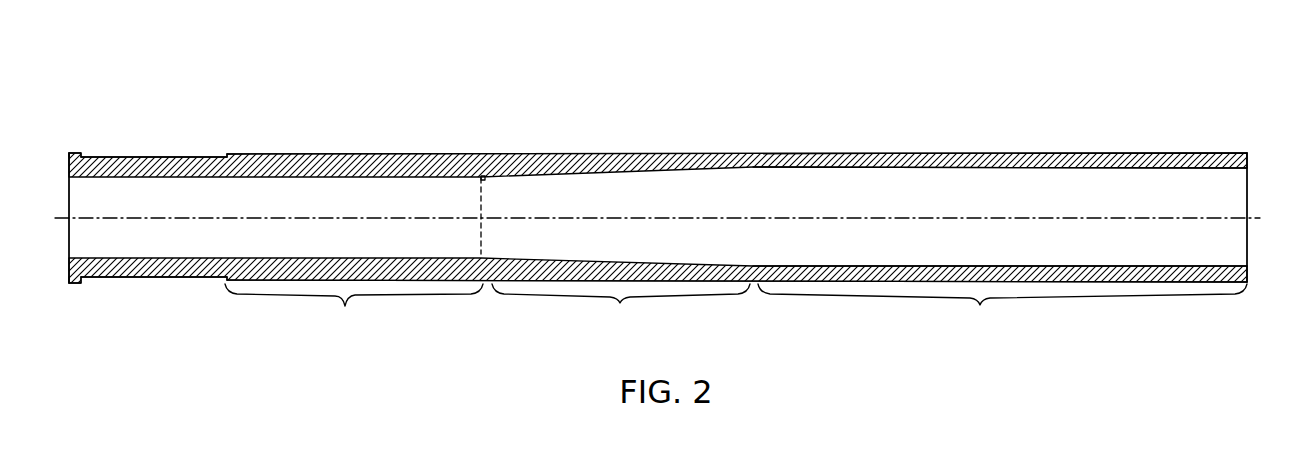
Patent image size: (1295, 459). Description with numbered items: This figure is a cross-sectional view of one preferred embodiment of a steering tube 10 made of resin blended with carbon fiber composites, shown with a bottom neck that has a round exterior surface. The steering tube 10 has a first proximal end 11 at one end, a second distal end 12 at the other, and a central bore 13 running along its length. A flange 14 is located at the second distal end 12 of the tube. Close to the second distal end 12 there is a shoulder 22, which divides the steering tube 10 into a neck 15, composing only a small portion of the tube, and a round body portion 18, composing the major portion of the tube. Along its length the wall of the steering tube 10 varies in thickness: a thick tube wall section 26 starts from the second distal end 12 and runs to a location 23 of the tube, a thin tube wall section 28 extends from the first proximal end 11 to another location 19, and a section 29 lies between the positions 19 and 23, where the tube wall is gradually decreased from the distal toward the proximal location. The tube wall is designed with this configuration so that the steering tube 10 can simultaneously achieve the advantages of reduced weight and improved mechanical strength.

The steering tube 10 is at (889, 107).
The first proximal end 11 is at (1247, 153).
The second distal end 12 is at (69, 155).
The central bore 13 is at (674, 218).
The flange 14 is at (80, 152).
The neck 15 is at (162, 157).
The round body portion 18 is at (617, 153).
The location 19 is at (752, 175).
The shoulder 22 is at (228, 154).
The location 23 is at (485, 179).
The thick tube wall section 26 is at (354, 315).
The thin tube wall section 28 is at (1002, 312).
The section 29 is at (621, 314).